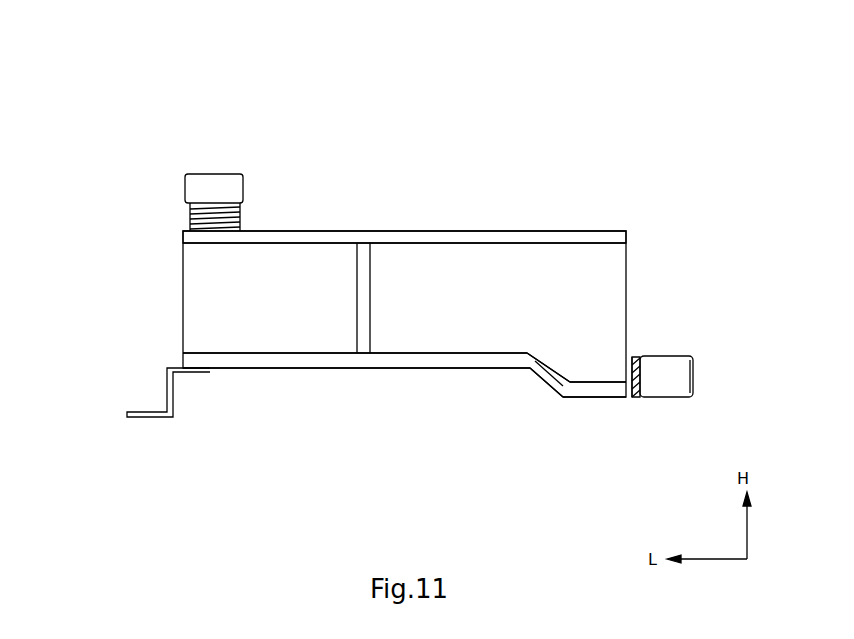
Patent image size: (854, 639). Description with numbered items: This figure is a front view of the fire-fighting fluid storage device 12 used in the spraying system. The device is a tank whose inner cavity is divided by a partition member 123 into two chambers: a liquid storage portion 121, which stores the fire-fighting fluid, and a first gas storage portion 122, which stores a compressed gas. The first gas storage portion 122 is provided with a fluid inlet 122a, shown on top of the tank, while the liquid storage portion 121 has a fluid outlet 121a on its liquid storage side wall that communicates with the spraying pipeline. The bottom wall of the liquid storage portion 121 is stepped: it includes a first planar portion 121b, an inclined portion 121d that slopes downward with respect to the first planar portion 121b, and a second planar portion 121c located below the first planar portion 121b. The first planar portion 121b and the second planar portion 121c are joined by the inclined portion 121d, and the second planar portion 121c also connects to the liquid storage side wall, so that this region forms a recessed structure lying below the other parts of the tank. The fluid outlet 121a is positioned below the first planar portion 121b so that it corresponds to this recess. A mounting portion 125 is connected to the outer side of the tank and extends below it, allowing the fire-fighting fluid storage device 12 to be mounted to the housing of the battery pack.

The fire-fighting fluid storage device 12 is at (128, 71).
The liquid storage portion 121 is at (490, 252).
The fluid outlet 121a is at (666, 368).
The first planar portion 121b is at (292, 355).
The second planar portion 121c is at (590, 396).
The inclined portion 121d is at (543, 377).
The first gas storage portion 122 is at (325, 262).
The fluid inlet 122a is at (212, 174).
The partition member 123 is at (365, 343).
The mounting portion 125 is at (132, 412).